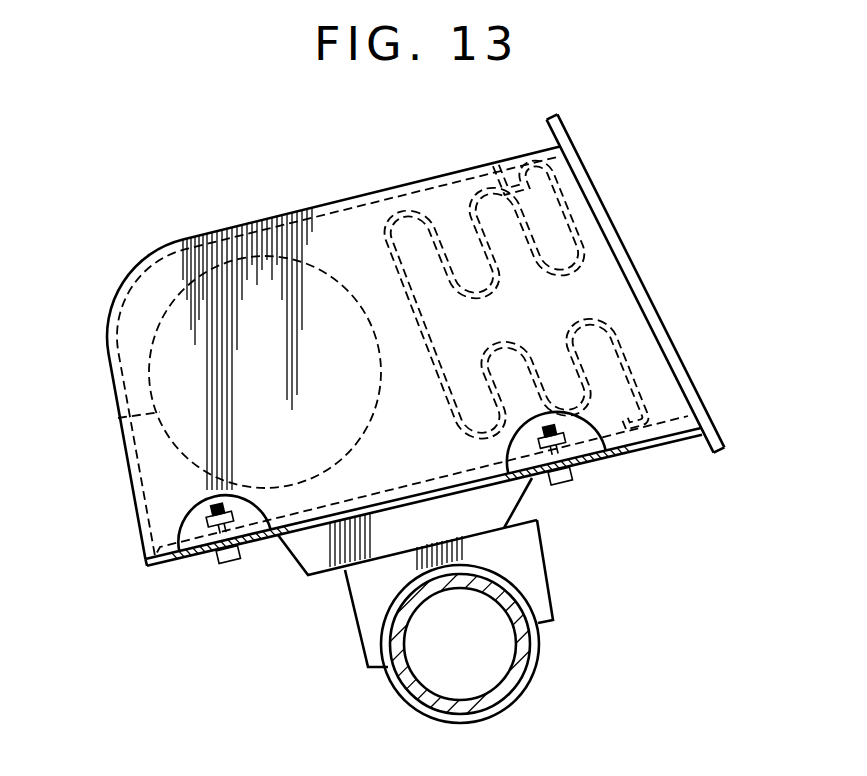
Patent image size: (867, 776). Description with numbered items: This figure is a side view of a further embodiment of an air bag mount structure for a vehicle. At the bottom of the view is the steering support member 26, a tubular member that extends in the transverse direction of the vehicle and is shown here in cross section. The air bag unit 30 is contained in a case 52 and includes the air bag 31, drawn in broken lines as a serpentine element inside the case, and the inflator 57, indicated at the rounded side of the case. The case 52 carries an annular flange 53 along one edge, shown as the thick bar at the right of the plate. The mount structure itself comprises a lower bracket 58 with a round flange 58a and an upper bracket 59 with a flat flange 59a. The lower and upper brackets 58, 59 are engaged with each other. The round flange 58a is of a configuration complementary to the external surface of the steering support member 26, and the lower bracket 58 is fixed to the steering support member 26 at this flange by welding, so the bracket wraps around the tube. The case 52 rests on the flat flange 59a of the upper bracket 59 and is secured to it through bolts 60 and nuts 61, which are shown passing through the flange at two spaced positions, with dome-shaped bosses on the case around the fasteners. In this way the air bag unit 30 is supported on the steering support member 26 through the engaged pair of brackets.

The steering support member 26 is at (413, 707).
The air bag unit 30 is at (499, 146).
The air bag 31 is at (396, 217).
The case 52 is at (290, 205).
The annular flange 53 is at (652, 291).
The inflator 57 is at (112, 423).
The lower bracket 58 is at (537, 575).
The round flange 58a is at (553, 600).
The upper bracket 59 is at (525, 497).
The flat flange 59a is at (626, 455).
The bolts 60 is at (237, 565).
The nuts 61 is at (247, 513).